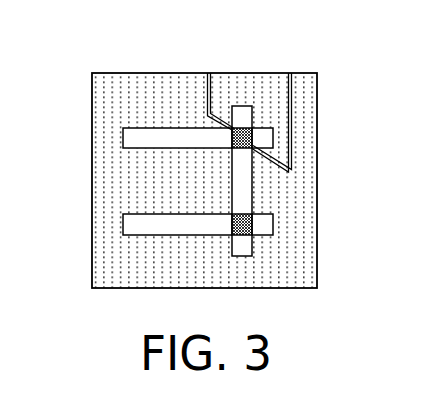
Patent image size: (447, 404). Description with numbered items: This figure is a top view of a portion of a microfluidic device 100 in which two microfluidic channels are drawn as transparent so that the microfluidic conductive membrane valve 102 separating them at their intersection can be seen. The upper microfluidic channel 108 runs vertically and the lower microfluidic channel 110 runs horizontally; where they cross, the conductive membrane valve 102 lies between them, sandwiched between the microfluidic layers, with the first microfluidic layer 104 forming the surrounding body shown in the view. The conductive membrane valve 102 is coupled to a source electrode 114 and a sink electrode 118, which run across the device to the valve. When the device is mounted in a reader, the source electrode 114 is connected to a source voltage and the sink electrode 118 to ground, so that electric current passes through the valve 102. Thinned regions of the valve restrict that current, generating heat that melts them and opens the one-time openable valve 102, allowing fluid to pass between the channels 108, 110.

The microfluidic device 100 is at (233, 153).
The conductive membrane valve 102 is at (232, 149).
The first microfluidic layer 104 is at (318, 248).
The upper microfluidic channel 108 is at (247, 186).
The lower microfluidic channel 110 is at (177, 129).
The source electrode 114 is at (208, 82).
The sink electrode 118 is at (293, 96).